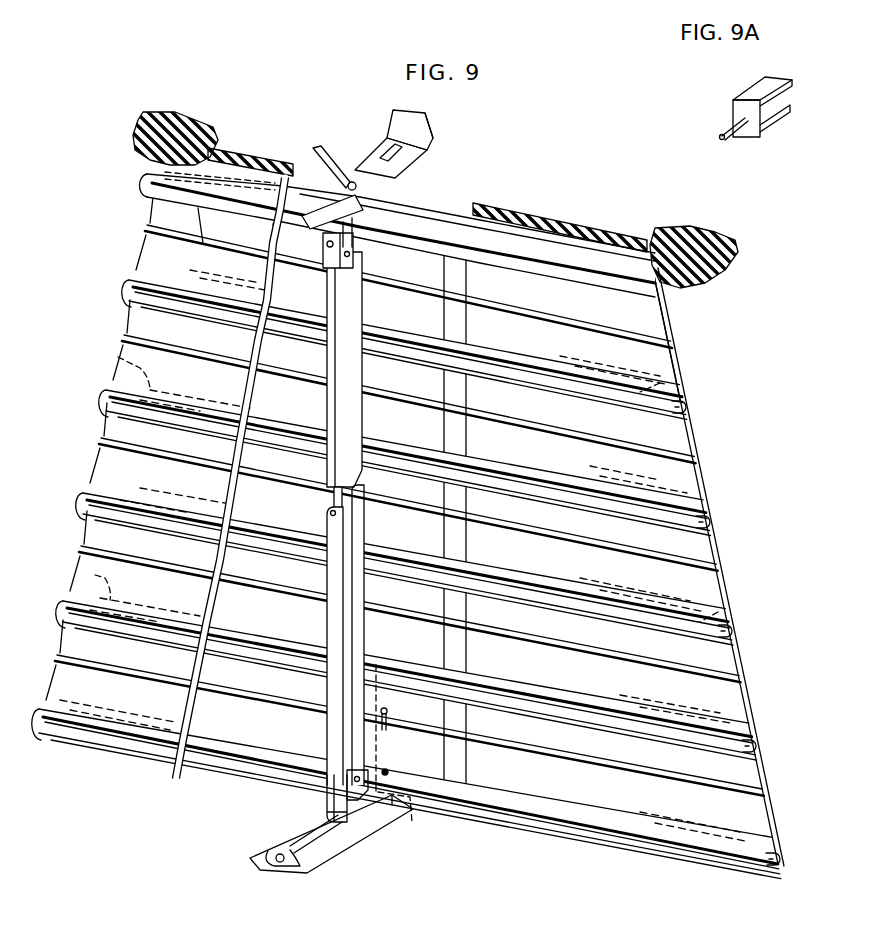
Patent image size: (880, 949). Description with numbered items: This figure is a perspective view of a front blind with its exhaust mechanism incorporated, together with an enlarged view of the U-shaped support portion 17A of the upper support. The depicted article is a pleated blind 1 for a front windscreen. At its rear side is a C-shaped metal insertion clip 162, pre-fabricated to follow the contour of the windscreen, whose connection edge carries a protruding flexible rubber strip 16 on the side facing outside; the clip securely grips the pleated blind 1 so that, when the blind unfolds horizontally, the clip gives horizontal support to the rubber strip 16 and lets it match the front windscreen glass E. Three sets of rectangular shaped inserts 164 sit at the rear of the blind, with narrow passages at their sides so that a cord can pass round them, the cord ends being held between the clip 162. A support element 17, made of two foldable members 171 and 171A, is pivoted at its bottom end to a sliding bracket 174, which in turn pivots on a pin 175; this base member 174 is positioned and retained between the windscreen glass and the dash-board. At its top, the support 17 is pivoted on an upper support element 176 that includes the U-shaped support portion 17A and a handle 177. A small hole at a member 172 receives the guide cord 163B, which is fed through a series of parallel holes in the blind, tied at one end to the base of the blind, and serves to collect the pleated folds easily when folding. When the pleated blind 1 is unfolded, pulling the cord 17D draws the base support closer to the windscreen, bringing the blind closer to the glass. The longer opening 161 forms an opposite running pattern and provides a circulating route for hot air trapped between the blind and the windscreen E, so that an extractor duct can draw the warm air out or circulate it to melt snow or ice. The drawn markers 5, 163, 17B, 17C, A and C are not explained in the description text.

In FIG. 9, the pleated blind 1 is at (680, 357).
In FIG. 9, the latch plate 5 is at (380, 153).
In FIG. 9, the protruding flexible rubber strip 16 is at (406, 557).
In FIG. 9, the longer opening 161 is at (118, 357).
In FIG. 9, the C-shaped metal insertion clip 162 is at (748, 845).
In FIG. 9, the side rail 163 is at (745, 700).
In FIG. 9, the cord 163B is at (320, 143).
In FIG. 9, the rectangular shaped inserts 164 is at (478, 762).
In FIG. 9, the support element 17 is at (327, 572).
In FIG. 9A, the U-shaped support portion 17A is at (752, 96).
In FIG. 9, the pin 17B is at (392, 770).
In FIG. 9, the pin 17C is at (392, 717).
In FIG. 9, the cord 17D is at (378, 673).
In FIG. 9, the foldable member 171 is at (330, 690).
In FIG. 9, the foldable member 171A is at (324, 406).
In FIG. 9, the member 172 is at (326, 796).
In FIG. 9, the sliding bracket 174 is at (350, 830).
In FIG. 9, the pin 175 is at (290, 840).
In FIG. 9, the upper support element 176 is at (353, 252).
In FIG. 9, the handle 177 is at (315, 226).
In FIG. 9, the pivot A is at (357, 187).
In FIG. 9, the jamb section C is at (180, 130).
In FIG. 9, the front windscreen glass E is at (253, 160).